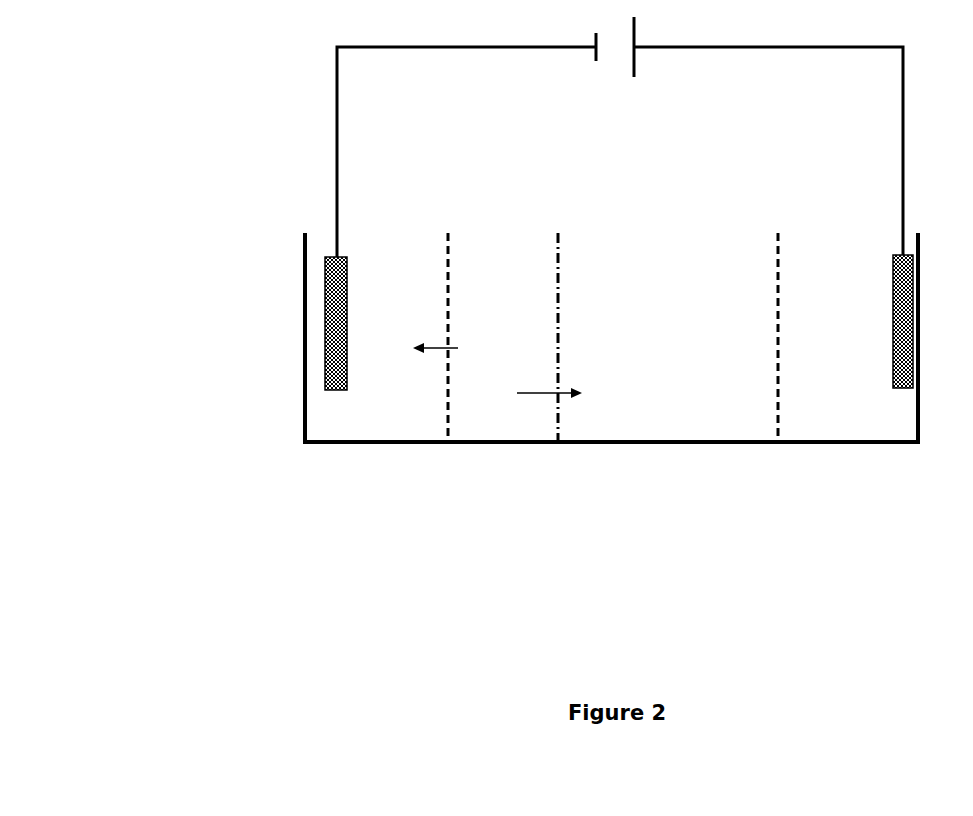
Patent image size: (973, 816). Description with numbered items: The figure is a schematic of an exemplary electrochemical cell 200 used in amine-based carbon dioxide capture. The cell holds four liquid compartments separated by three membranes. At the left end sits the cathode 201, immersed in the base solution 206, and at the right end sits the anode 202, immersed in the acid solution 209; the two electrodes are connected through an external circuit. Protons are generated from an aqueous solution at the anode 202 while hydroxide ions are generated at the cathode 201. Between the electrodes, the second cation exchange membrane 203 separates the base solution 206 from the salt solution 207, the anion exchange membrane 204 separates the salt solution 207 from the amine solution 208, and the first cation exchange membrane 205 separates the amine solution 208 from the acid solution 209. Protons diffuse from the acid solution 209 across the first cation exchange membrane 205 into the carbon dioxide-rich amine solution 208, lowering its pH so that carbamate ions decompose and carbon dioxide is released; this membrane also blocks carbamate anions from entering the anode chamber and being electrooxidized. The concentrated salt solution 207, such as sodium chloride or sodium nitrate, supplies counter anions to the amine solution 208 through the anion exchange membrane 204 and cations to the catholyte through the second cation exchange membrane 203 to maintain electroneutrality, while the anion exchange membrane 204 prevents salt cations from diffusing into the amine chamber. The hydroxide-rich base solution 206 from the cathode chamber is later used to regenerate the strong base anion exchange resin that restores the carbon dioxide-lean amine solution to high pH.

The electrochemical cell 200 is at (262, 177).
The cathode 201 is at (347, 265).
The anode 202 is at (893, 275).
The second cation exchange membrane 203 is at (438, 277).
The anion exchange membrane 204 is at (558, 246).
The first cation exchange membrane 205 is at (780, 247).
The base solution 206 is at (398, 442).
The salt solution 207 is at (518, 418).
The amine solution 208 is at (633, 367).
The acid solution 209 is at (827, 417).